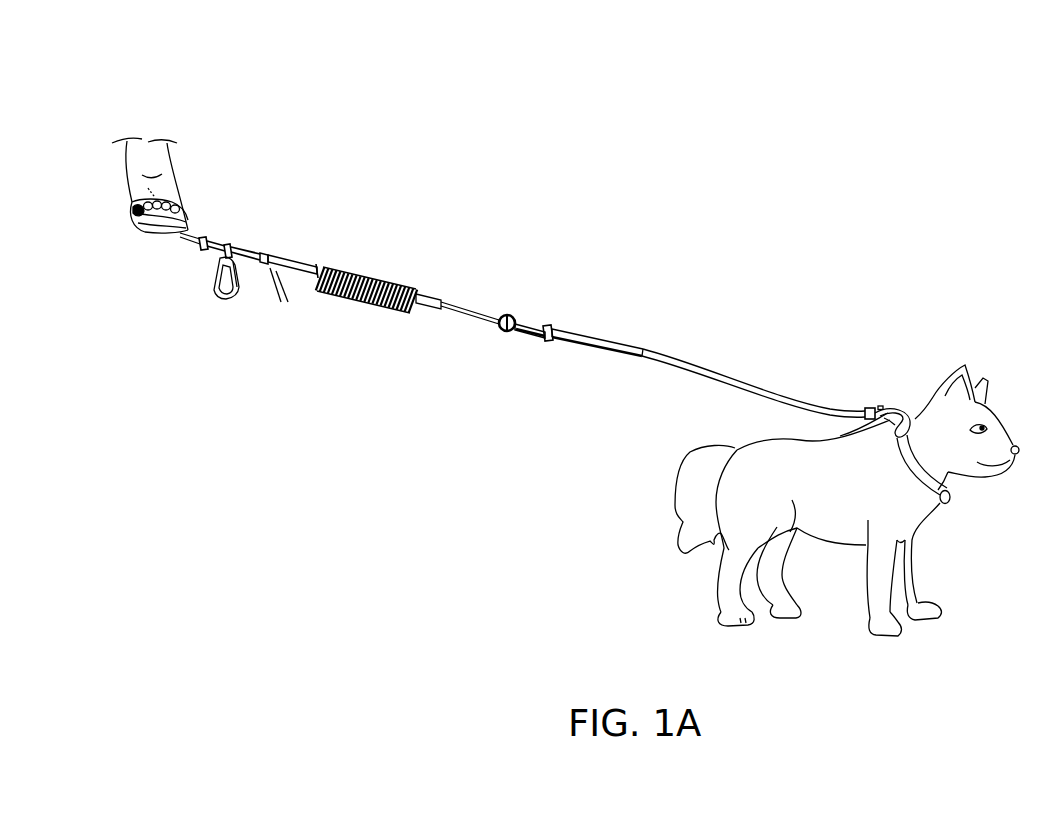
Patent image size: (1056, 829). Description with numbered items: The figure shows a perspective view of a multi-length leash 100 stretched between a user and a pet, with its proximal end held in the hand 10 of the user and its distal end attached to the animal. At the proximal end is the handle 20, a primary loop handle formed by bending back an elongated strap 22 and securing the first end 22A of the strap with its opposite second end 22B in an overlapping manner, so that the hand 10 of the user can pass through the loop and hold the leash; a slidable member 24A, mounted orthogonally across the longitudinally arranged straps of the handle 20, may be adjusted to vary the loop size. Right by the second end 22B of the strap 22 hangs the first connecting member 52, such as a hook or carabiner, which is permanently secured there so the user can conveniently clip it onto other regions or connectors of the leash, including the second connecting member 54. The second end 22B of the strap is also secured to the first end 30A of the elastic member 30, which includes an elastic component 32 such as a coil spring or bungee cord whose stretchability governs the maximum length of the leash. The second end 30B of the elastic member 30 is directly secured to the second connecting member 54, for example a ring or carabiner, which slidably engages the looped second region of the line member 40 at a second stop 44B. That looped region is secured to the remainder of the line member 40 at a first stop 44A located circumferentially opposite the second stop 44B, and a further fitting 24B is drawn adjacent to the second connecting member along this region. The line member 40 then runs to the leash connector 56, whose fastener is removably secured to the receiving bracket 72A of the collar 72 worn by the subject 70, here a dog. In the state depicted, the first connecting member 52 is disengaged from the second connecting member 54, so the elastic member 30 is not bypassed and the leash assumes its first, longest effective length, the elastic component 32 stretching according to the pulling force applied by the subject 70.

The multi-length leash 100 is at (920, 203).
The hand 10 is at (150, 153).
The handle 20 is at (124, 237).
The slidable member 24A is at (203, 240).
The elongated strap 22 is at (228, 248).
The first connecting member 52 is at (212, 268).
The first end of the elastic member 30A is at (299, 262).
The first end of the strap 22A is at (283, 302).
The second end of the strap 22B is at (282, 286).
The elastic member 30 is at (495, 345).
The elastic component 32 is at (372, 283).
The second end of the elastic member 30B is at (480, 312).
The second connecting member 54 is at (507, 333).
The second stop 44B is at (540, 330).
The second clip 24B is at (549, 328).
The first stop 44A is at (630, 351).
The line member 40 is at (911, 372).
The leash connector 56 is at (909, 397).
The receiving bracket 72A is at (840, 436).
The collar 72 is at (956, 486).
The subject 70 is at (922, 518).